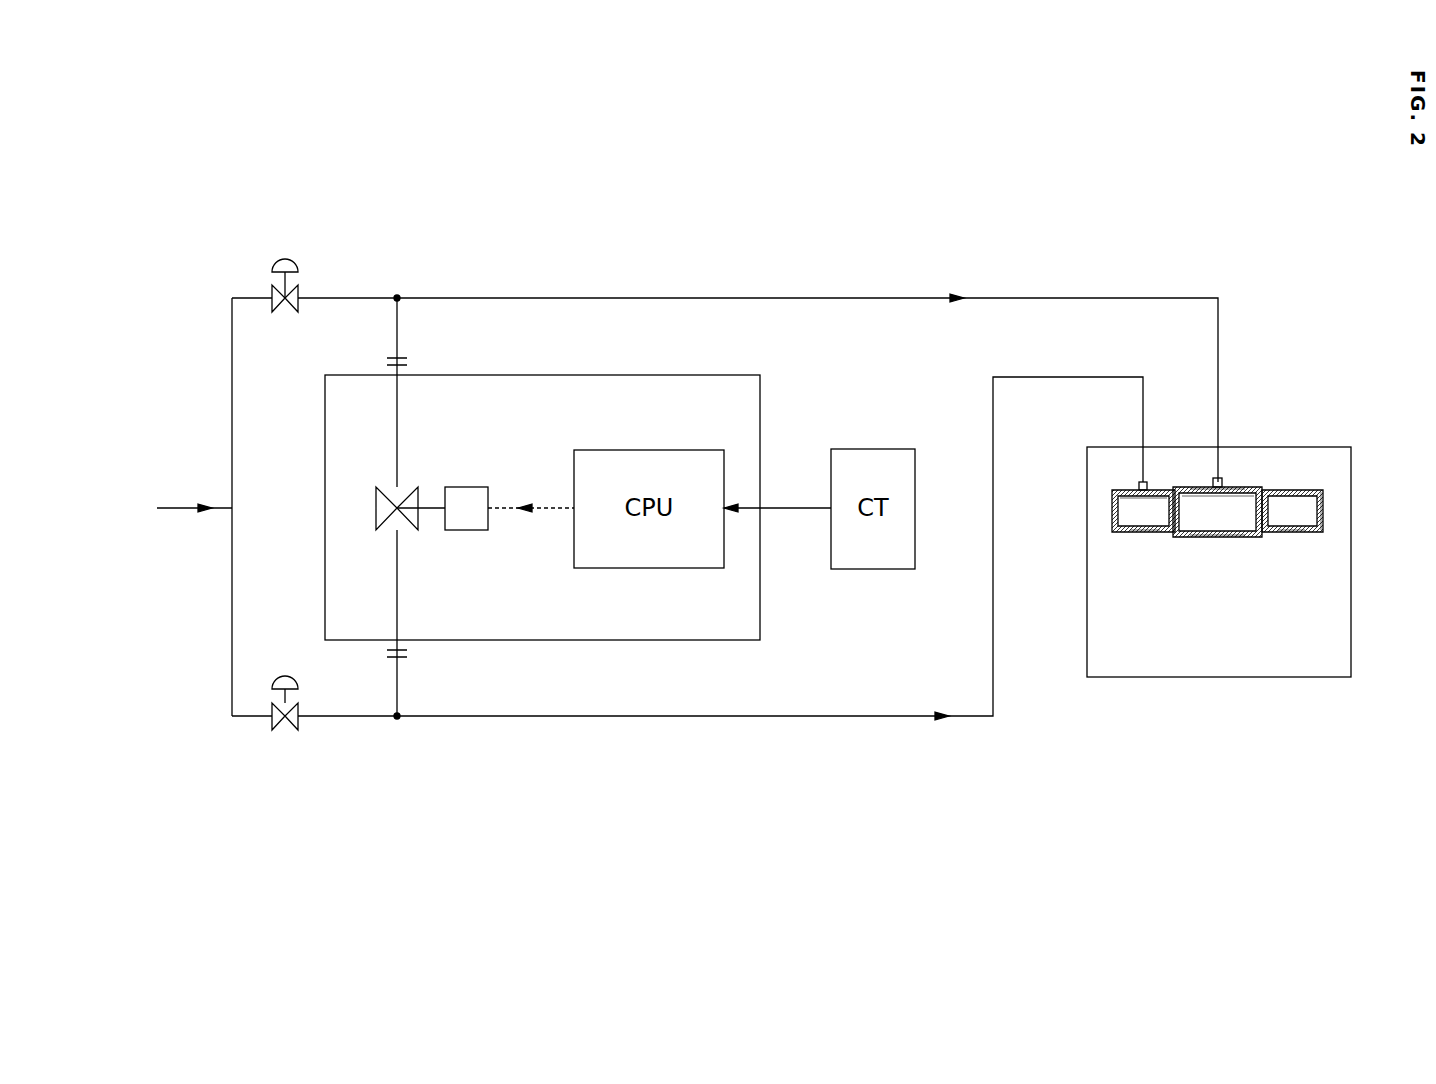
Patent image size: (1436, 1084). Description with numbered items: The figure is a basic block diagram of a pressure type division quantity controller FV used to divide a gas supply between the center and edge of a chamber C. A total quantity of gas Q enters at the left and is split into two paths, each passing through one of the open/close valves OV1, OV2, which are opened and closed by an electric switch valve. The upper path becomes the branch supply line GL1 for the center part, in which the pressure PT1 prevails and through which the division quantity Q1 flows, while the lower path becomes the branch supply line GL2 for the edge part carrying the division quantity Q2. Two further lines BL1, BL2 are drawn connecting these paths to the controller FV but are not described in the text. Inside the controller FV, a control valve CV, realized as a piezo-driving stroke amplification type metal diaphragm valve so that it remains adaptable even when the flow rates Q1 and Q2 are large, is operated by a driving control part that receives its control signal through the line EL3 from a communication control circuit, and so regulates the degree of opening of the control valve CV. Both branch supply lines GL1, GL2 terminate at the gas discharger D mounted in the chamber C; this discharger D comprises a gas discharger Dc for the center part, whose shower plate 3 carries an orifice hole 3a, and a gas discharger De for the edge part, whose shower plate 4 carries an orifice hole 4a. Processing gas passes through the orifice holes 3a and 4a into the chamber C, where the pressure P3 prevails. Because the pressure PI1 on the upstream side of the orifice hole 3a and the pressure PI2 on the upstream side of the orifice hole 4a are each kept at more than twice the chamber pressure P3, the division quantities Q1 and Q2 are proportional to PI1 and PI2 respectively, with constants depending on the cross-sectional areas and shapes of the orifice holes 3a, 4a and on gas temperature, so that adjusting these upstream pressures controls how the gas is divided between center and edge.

The total quantity of gas Q is at (208, 504).
The open/close valve OV1 is at (277, 313).
The open/close valve OV2 is at (277, 731).
The pressure in branch supply line PT1 is at (613, 298).
The branch supply line for the center part GL1 is at (802, 298).
The branch supply line for the edge part GL2 is at (798, 718).
The division quantity Q1 is at (958, 297).
The division quantity Q2 is at (945, 718).
The first branch line BL1 is at (397, 330).
The second branch line BL2 is at (397, 685).
The pressure type division quantity controller FV is at (760, 403).
The control valve CV is at (431, 480).
The line EL3 is at (783, 508).
The chamber C is at (1351, 583).
The pressure inside chamber P3 is at (1122, 635).
The gas discharger D is at (1325, 482).
The gas discharger for the center part Dc is at (1238, 487).
The gas discharger for the edge part De is at (1323, 498).
The pressure on the upstream side of the orifice hole PI1 is at (1240, 510).
The pressure on the upstream side of the orifice hole PI2 is at (1127, 510).
The shower plate 3 is at (1217, 538).
The orifice hole 3a is at (1235, 538).
The shower plate 4 is at (1160, 533).
The orifice hole 4a is at (1139, 533).